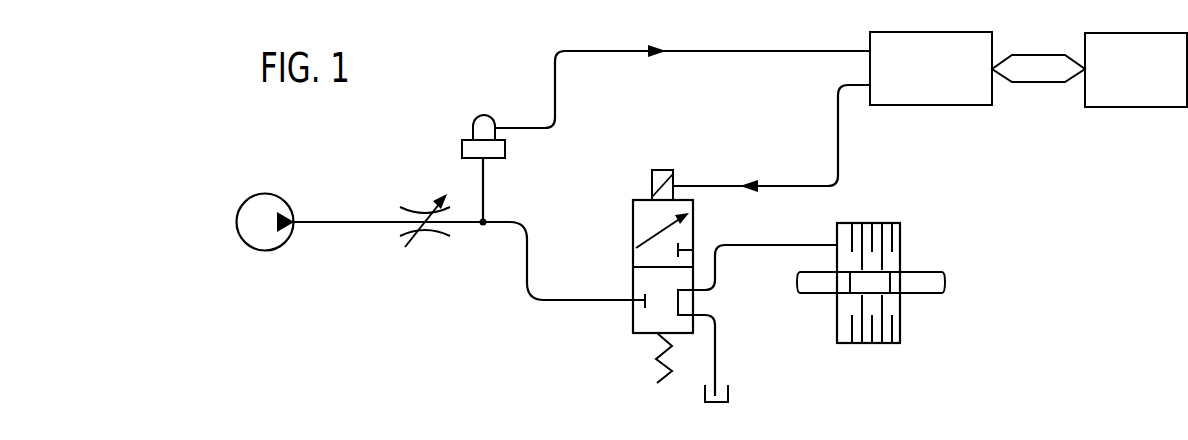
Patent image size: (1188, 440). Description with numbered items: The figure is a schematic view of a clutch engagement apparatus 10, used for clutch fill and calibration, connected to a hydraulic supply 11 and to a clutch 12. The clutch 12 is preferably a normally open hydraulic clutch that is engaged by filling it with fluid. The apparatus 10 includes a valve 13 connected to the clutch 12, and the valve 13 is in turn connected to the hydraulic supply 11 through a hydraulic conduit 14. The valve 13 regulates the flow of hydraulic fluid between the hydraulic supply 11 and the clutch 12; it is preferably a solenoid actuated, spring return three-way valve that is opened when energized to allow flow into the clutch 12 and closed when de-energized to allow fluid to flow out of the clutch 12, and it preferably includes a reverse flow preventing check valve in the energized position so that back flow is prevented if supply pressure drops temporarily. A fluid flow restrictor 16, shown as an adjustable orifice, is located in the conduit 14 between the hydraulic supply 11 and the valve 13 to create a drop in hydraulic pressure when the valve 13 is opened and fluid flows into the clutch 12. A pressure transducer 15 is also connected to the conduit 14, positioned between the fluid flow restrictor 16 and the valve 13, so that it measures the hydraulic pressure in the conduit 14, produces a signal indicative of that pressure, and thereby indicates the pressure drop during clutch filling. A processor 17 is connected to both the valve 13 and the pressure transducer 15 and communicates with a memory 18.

The clutch engagement apparatus 10 is at (442, 319).
The hydraulic supply 11 is at (255, 194).
The clutch 12 is at (863, 223).
The valve 13 is at (665, 170).
The hydraulic conduit 14 is at (362, 221).
The pressure transducer 15 is at (472, 129).
The fluid flow restrictor 16 is at (426, 206).
The processor 17 is at (942, 92).
The memory 18 is at (1147, 96).